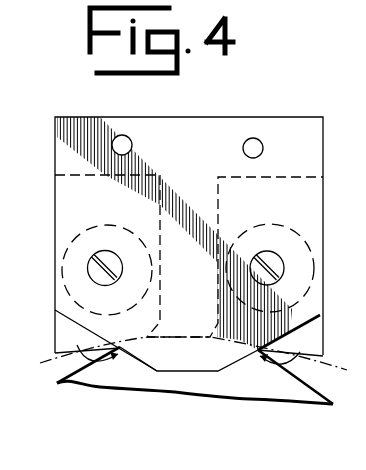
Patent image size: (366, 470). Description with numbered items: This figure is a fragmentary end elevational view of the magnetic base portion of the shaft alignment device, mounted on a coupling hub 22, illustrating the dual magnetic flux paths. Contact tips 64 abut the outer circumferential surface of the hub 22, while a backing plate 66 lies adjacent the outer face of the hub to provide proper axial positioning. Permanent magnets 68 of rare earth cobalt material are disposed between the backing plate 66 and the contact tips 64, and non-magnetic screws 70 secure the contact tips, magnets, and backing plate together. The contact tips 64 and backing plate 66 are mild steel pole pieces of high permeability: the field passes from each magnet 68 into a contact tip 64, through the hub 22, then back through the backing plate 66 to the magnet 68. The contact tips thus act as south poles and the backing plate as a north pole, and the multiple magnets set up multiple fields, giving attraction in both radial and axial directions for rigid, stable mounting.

The contact tip 64 is at (83, 196).
The magnet 68 is at (65, 287).
The screw 70 is at (92, 264).
The backing plate 66 is at (223, 362).
The coupling hub 22 is at (320, 394).